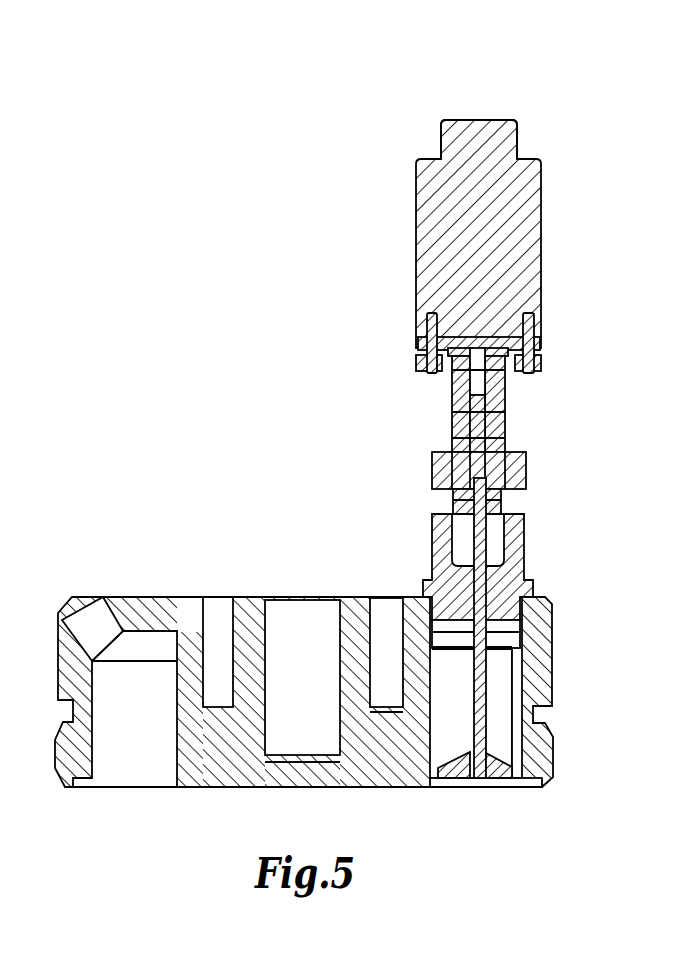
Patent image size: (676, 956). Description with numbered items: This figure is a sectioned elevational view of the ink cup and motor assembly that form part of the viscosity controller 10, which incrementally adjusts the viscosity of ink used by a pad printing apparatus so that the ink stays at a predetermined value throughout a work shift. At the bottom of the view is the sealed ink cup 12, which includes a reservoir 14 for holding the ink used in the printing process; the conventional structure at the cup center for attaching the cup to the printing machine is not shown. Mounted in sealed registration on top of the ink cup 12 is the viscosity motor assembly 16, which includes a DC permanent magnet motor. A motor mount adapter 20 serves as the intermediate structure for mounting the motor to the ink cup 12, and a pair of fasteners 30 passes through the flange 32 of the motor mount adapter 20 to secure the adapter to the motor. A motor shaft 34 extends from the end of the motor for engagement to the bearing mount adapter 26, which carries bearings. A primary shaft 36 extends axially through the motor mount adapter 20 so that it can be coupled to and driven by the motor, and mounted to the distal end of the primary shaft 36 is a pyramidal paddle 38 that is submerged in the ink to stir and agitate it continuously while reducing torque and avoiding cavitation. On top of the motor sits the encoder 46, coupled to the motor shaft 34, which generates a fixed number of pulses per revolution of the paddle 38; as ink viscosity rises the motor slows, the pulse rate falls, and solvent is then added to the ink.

The viscosity controller 10 is at (360, 474).
The ink cup 12 is at (305, 680).
The reservoir 14 is at (432, 735).
The viscosity motor assembly 16 is at (561, 220).
The motor mount adapter 20 is at (448, 413).
The bearing mount adapter 26 is at (508, 418).
The fasteners 30 is at (421, 368).
The flange 32 is at (541, 347).
The motor shaft 34 is at (421, 336).
The primary shaft 36 is at (480, 693).
The paddle 38 is at (497, 760).
The encoder 46 is at (515, 140).